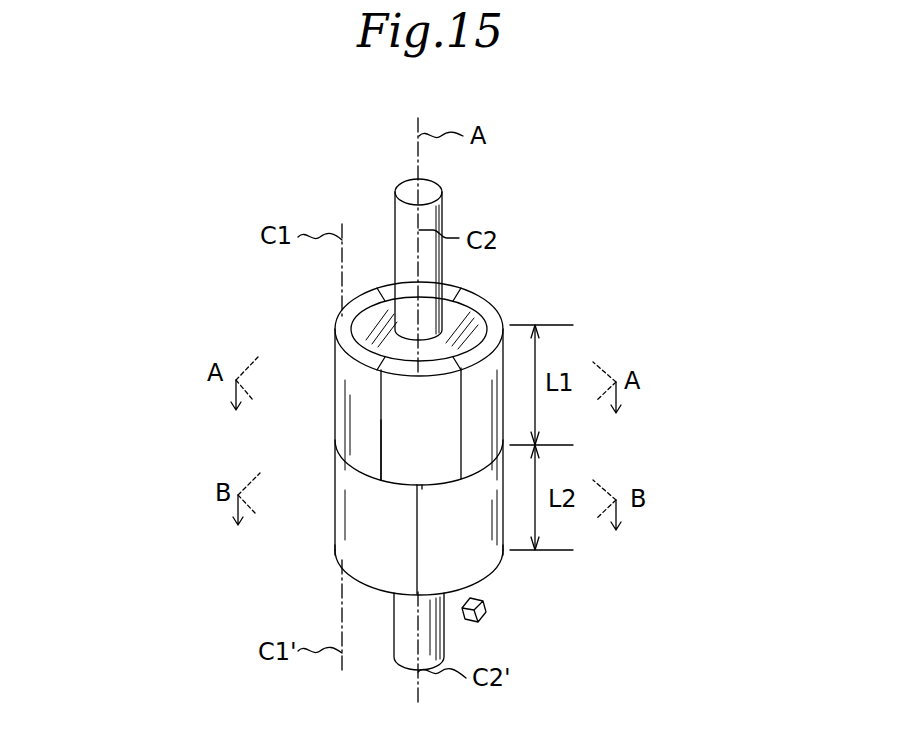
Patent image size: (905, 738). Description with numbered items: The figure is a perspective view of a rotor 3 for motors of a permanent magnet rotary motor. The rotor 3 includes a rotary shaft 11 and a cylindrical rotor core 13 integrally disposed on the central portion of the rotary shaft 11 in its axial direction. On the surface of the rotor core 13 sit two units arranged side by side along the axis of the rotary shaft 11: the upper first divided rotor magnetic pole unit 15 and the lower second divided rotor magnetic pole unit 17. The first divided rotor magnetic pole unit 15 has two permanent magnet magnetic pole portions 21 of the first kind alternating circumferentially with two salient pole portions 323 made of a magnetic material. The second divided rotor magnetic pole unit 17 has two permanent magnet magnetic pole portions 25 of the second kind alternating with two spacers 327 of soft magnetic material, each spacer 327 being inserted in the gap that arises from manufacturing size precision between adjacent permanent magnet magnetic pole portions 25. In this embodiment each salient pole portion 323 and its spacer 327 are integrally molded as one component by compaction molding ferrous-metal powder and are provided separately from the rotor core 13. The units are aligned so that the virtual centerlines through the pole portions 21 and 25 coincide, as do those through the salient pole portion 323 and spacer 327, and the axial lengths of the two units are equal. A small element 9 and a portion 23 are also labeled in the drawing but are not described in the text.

The rotor for motors 3 is at (316, 320).
The key 9 is at (482, 614).
The rotary shaft 11 is at (442, 206).
The rotor core 13 is at (462, 303).
The first divided rotor magnetic pole unit 15 is at (314, 365).
The second divided rotor magnetic pole unit 17 is at (318, 563).
The permanent magnet magnetic pole portion of the first kind 21 is at (352, 375).
The ring portion 23 is at (382, 293).
The permanent magnet magnetic pole portion of the second kind 25 is at (340, 570).
The salient pole portion 323 is at (393, 428).
The spacer 327 is at (413, 565).